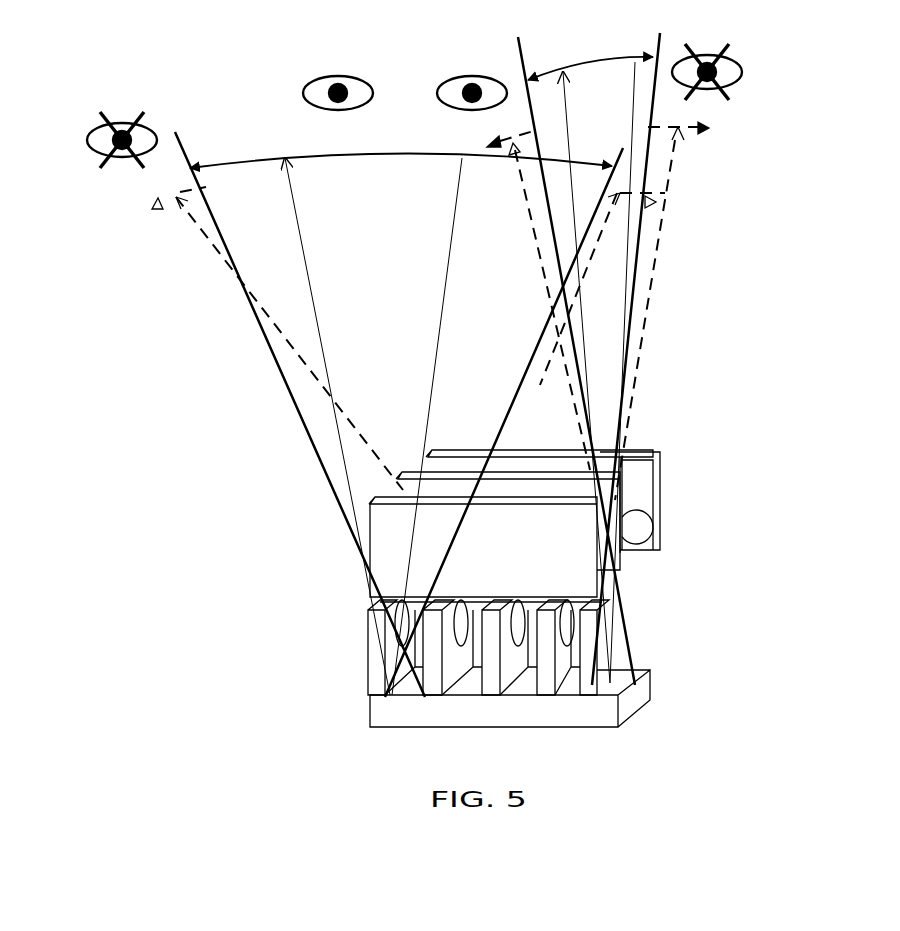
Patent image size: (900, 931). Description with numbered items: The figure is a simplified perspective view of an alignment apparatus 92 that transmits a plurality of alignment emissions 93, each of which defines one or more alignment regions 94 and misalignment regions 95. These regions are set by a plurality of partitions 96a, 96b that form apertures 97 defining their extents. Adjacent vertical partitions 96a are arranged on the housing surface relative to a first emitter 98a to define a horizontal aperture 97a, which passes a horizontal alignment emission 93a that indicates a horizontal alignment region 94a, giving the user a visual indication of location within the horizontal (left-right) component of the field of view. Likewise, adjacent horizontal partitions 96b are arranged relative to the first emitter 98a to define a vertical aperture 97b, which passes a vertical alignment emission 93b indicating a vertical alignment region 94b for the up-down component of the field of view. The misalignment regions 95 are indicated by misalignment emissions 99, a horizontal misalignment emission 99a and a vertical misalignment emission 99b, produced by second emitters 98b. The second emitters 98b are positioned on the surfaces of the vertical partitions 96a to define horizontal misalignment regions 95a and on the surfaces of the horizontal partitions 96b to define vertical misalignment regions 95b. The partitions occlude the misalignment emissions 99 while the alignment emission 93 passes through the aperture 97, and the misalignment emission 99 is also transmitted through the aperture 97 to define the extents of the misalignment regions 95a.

The alignment apparatus 92 is at (316, 618).
The alignment emissions 93 is at (458, 365).
The horizontal alignment emission 93a is at (430, 417).
The vertical alignment emission 93b is at (587, 367).
The alignment regions 94 is at (455, 352).
The horizontal alignment region 94a is at (328, 207).
The vertical alignment region 94b is at (645, 298).
The misalignment regions 95 is at (435, 118).
The horizontal misalignment regions 95a is at (174, 197).
The vertical misalignment regions 95b is at (505, 135).
The vertical partitions 96a is at (520, 690).
The horizontal partitions 96b is at (625, 487).
The apertures 97 is at (456, 470).
The horizontal aperture 97a is at (530, 595).
The vertical aperture 97b is at (499, 485).
The first emitter 98a is at (629, 672).
The second emitters 98b is at (567, 637).
The misalignment emissions 99 is at (468, 313).
The horizontal misalignment emission 99a is at (235, 272).
The vertical misalignment emission 99b is at (517, 190).